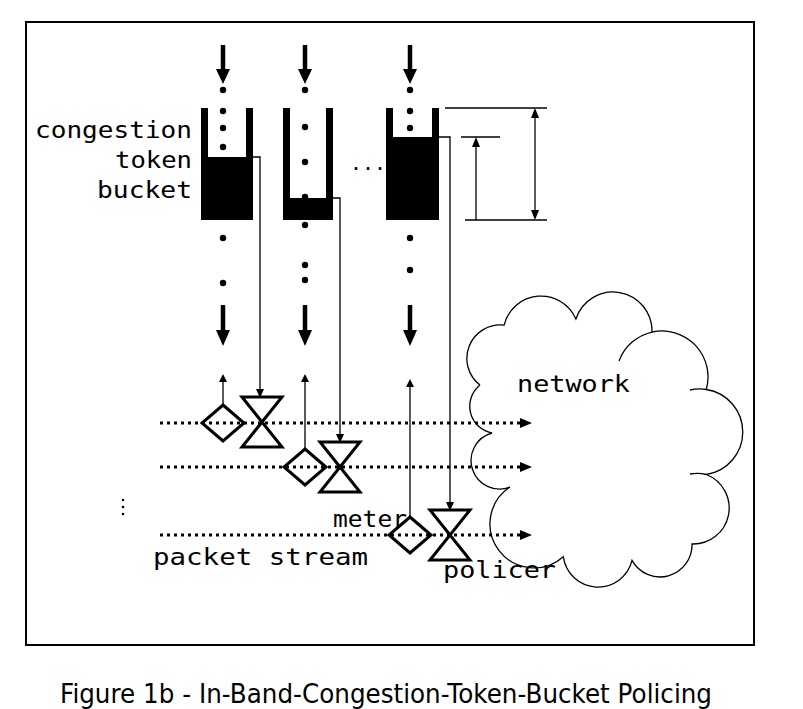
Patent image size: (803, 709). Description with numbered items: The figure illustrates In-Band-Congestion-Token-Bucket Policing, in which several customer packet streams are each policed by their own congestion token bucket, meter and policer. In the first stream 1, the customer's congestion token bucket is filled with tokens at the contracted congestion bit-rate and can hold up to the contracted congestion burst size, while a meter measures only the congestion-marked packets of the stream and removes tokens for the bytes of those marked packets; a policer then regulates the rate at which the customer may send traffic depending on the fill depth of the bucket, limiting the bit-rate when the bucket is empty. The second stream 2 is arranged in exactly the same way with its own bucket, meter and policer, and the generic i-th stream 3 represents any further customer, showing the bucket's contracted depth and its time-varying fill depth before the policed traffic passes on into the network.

The first packet stream path: congestion token bucket, meter and policer for stream 1 is at (344, 244).
The second packet stream path: congestion token bucket, meter and policer for stream 2 is at (344, 267).
The i-th (generic) packet stream path: congestion token bucket with capacity ci and 3 is at (339, 301).